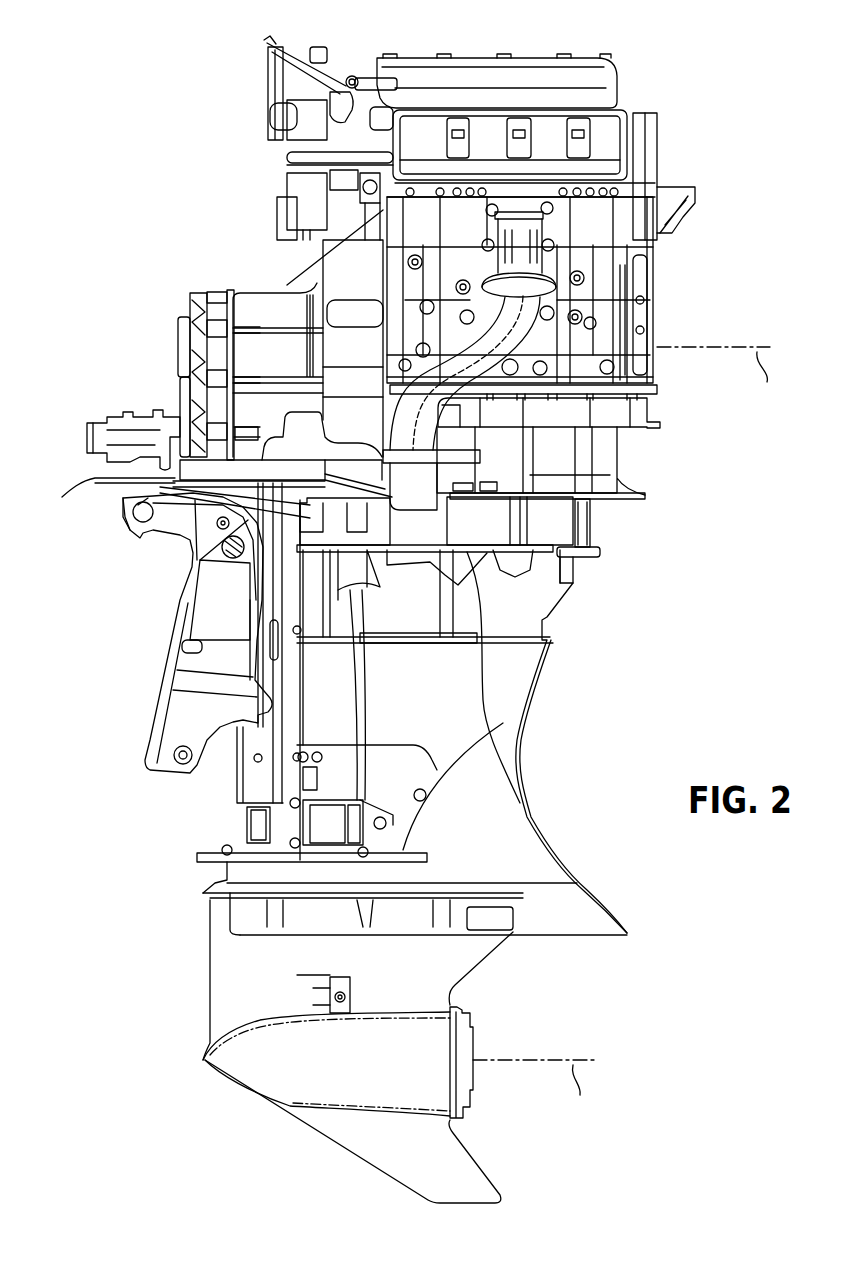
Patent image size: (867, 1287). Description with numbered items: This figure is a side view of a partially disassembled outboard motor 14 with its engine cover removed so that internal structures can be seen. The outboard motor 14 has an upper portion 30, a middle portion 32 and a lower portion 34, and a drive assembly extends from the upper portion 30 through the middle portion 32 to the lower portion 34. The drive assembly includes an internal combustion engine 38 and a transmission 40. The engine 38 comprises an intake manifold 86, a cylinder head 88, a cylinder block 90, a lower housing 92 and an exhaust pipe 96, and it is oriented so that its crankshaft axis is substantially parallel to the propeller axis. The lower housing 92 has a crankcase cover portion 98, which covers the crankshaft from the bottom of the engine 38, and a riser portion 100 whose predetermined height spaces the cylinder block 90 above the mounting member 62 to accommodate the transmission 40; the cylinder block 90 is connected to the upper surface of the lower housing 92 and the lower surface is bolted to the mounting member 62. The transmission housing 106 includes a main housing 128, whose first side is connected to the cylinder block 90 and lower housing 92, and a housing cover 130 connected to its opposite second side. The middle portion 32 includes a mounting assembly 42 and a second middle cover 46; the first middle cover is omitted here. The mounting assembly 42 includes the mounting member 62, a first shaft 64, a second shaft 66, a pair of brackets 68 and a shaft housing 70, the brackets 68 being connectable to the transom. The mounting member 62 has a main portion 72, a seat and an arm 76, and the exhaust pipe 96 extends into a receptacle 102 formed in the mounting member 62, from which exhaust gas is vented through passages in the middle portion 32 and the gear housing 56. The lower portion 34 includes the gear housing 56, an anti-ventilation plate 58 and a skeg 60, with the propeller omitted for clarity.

The outboard motor 14 is at (705, 74).
The upper portion 30 is at (707, 194).
The middle portion 32 is at (598, 632).
The lower portion 34 is at (632, 1043).
The engine 38 is at (668, 297).
The transmission 40 is at (168, 350).
The mounting assembly 42 is at (133, 712).
The second middle cover 46 is at (518, 766).
The gear housing 56 is at (482, 968).
The anti-ventilation plate 58 is at (250, 937).
The skeg 60 is at (350, 1160).
The mounting member 62 is at (627, 541).
The first shaft 64 is at (245, 818).
The second shaft 66 is at (125, 515).
The bracket 68 is at (158, 675).
The shaft housing 70 is at (241, 780).
The main portion 72 is at (603, 533).
The arm 76 is at (93, 485).
The intake manifold 86 is at (466, 58).
The cylinder head 88 is at (660, 158).
The cylinder block 90 is at (656, 345).
The lower housing 92 is at (589, 444).
The exhaust pipe 96 is at (453, 377).
The crankcase cover portion 98 is at (655, 427).
The riser portion 100 is at (627, 492).
The receptacle 102 is at (410, 500).
The transmission housing 106 is at (215, 293).
The main housing 128 is at (253, 292).
The housing cover 130 is at (178, 322).